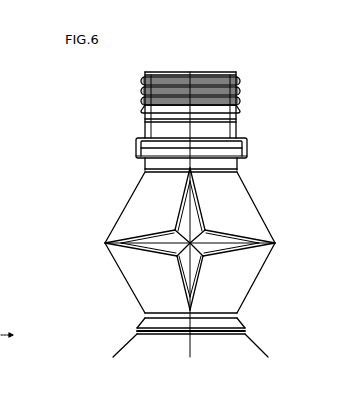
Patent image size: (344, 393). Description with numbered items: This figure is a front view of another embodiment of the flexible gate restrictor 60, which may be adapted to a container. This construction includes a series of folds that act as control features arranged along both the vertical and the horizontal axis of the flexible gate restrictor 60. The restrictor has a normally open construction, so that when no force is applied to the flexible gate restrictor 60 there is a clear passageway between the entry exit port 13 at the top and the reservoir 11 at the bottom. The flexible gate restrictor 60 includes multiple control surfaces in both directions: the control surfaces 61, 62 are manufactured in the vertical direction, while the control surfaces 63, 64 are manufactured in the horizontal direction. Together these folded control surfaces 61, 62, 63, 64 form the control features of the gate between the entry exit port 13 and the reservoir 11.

The reservoir 11 is at (240, 355).
The entry exit port 13 is at (227, 57).
The flexible gate restrictor 60 is at (114, 100).
The control surface 61 is at (178, 219).
The control surface 62 is at (197, 222).
The control surface 63 is at (150, 234).
The control surface 64 is at (165, 252).